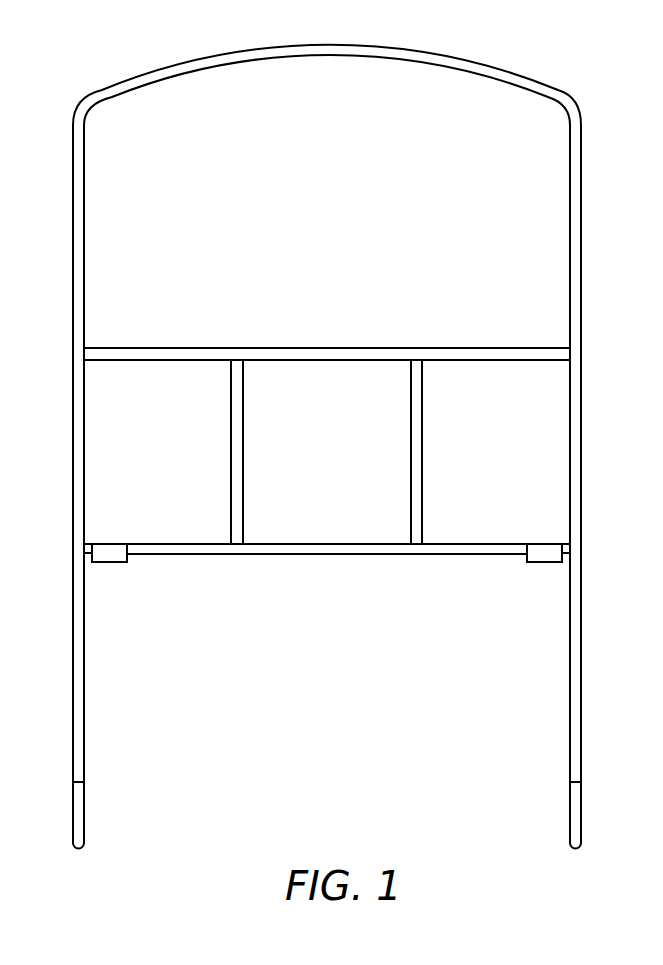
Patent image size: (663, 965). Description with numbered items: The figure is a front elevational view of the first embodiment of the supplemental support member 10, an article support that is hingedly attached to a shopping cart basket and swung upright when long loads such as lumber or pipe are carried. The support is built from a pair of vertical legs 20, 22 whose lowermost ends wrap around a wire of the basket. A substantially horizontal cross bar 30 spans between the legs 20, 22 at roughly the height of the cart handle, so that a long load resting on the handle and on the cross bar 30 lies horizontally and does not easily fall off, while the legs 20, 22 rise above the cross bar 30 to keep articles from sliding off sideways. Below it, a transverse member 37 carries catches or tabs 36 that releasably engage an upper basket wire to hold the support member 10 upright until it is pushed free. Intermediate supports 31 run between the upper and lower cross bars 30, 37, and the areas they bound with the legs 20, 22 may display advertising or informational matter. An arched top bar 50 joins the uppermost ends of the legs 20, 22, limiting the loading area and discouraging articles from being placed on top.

The supplemental support member 10 is at (323, 424).
The vertical leg 20 is at (84, 226).
The vertical leg 22 is at (570, 226).
The cross bar 30 is at (445, 348).
The intermediate supports 31 is at (411, 450).
The catches or tabs 36 is at (108, 553).
The transverse member 37 is at (252, 554).
The top bar 50 is at (467, 62).